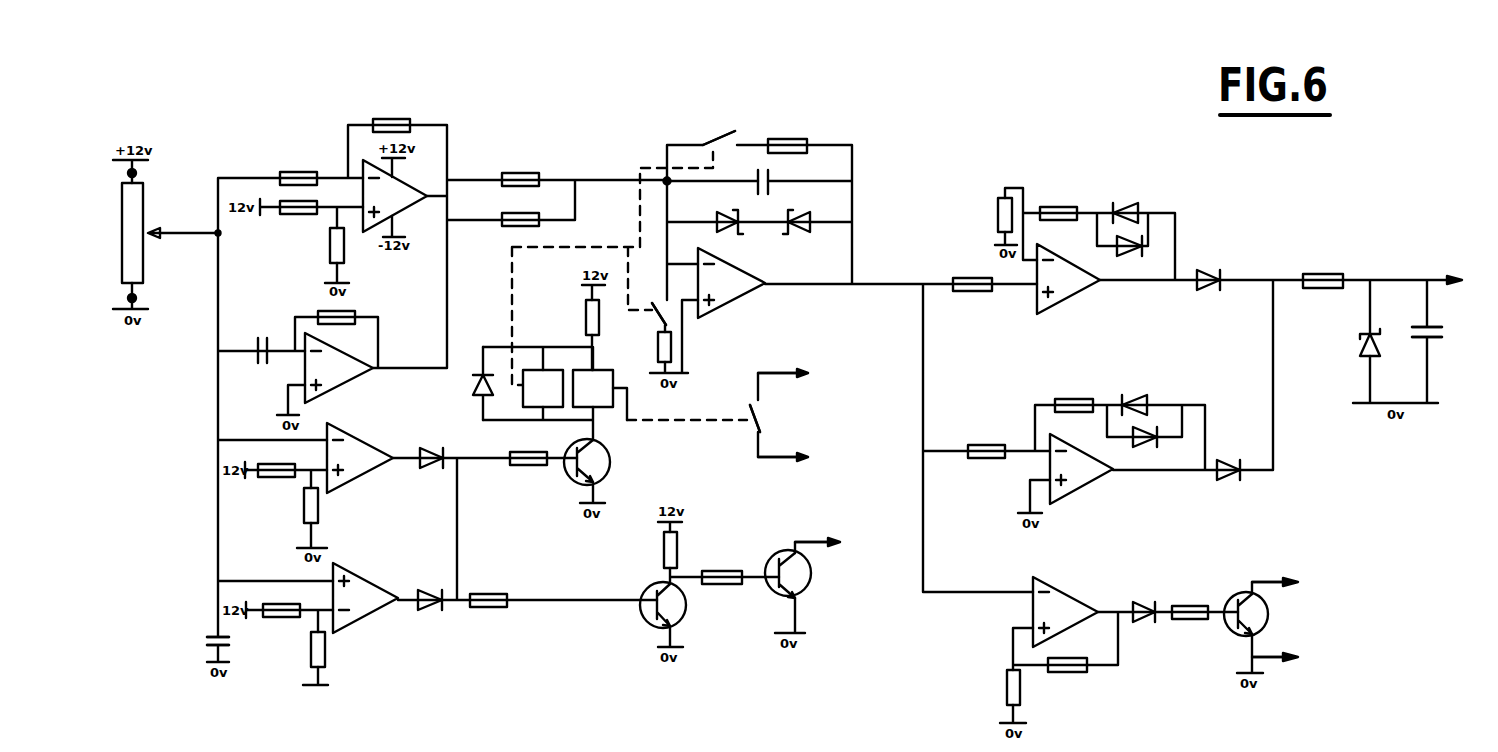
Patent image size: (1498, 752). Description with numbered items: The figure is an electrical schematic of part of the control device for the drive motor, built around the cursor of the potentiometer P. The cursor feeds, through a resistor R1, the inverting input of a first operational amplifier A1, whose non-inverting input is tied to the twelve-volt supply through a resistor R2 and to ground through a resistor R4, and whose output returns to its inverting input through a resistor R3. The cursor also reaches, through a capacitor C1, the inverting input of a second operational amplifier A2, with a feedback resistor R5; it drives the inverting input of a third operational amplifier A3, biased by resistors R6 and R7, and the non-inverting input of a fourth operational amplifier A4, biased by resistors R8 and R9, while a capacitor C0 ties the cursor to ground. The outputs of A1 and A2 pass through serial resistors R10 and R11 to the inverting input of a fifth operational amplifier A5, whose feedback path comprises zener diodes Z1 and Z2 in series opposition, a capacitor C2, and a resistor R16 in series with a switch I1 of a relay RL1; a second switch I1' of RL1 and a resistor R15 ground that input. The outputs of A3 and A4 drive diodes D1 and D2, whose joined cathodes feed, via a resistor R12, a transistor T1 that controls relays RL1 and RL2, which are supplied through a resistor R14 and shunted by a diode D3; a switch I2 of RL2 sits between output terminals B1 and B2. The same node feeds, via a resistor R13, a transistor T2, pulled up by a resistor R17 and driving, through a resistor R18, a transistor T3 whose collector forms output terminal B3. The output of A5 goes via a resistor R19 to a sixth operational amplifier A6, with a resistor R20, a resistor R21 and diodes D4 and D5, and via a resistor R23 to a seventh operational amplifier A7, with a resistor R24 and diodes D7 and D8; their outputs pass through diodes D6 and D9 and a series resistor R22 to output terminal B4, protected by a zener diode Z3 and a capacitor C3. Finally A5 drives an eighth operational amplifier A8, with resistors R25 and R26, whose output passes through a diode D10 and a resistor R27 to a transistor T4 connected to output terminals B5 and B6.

The resistor R1 is at (298, 165).
The resistor R2 is at (298, 221).
The resistor R3 is at (391, 112).
The resistor R4 is at (320, 254).
The resistor R5 is at (347, 330).
The resistor R6 is at (276, 483).
The resistor R7 is at (329, 512).
The resistor R8 is at (281, 623).
The resistor R9 is at (334, 657).
The serial resistor R10 is at (525, 167).
The serial resistor R11 is at (508, 235).
The resistor R12 is at (524, 474).
The resistor R13 is at (494, 586).
The resistor R14 is at (574, 317).
The resistor R15 is at (648, 347).
The resistor R16 is at (791, 133).
The resistor R17 is at (651, 550).
The resistor R18 is at (726, 564).
The resistor R19 is at (976, 303).
The resistor R20 is at (981, 215).
The resistor R21 is at (1065, 200).
The series resistor R22 is at (1322, 268).
The resistor R23 is at (987, 438).
The resistor R24 is at (1074, 393).
The resistor R25 is at (990, 687).
The resistor R26 is at (1073, 680).
The resistor R27 is at (1195, 601).
The first operational amplifier A1 is at (395, 196).
The second operational amplifier A2 is at (339, 368).
The third operational amplifier A3 is at (360, 458).
The fourth operational amplifier A4 is at (365, 598).
The fifth operational amplifier A5 is at (731, 283).
The sixth operational amplifier A6 is at (1068, 279).
The seventh operational amplifier A7 is at (1081, 469).
The eighth operational amplifier A8 is at (1065, 612).
The capacitor C0 is at (199, 641).
The capacitor C1 is at (262, 334).
The capacitor C2 is at (780, 176).
The capacitor C3 is at (1447, 336).
The diode D1 is at (434, 446).
The diode D2 is at (431, 587).
The diode D3 is at (466, 383).
The diode D4 is at (1131, 201).
The diode D5 is at (1145, 257).
The diode D6 is at (1209, 265).
The diode D7 is at (1139, 391).
The diode D8 is at (1162, 447).
The diode D9 is at (1233, 456).
The diode D10 is at (1151, 631).
The zener diode Z1 is at (717, 215).
The zener diode Z2 is at (807, 238).
The zener diode Z3 is at (1349, 348).
The NPN bipolar transistor T1 is at (606, 462).
The NPN bipolar transistor T2 is at (678, 610).
The NPN bipolar transistor T3 is at (803, 576).
The NPN bipolar transistor T4 is at (1266, 614).
The relay RL1 is at (544, 388).
The relay RL2 is at (594, 388).
The switch I1 is at (719, 128).
The switch I1' is at (650, 302).
The switch I2 is at (739, 411).
The output terminal B1 is at (802, 375).
The output terminal B2 is at (802, 459).
The output terminal B3 is at (839, 546).
The output terminal B4 is at (1472, 286).
The output terminal B5 is at (1295, 586).
The output terminal B6 is at (1295, 661).